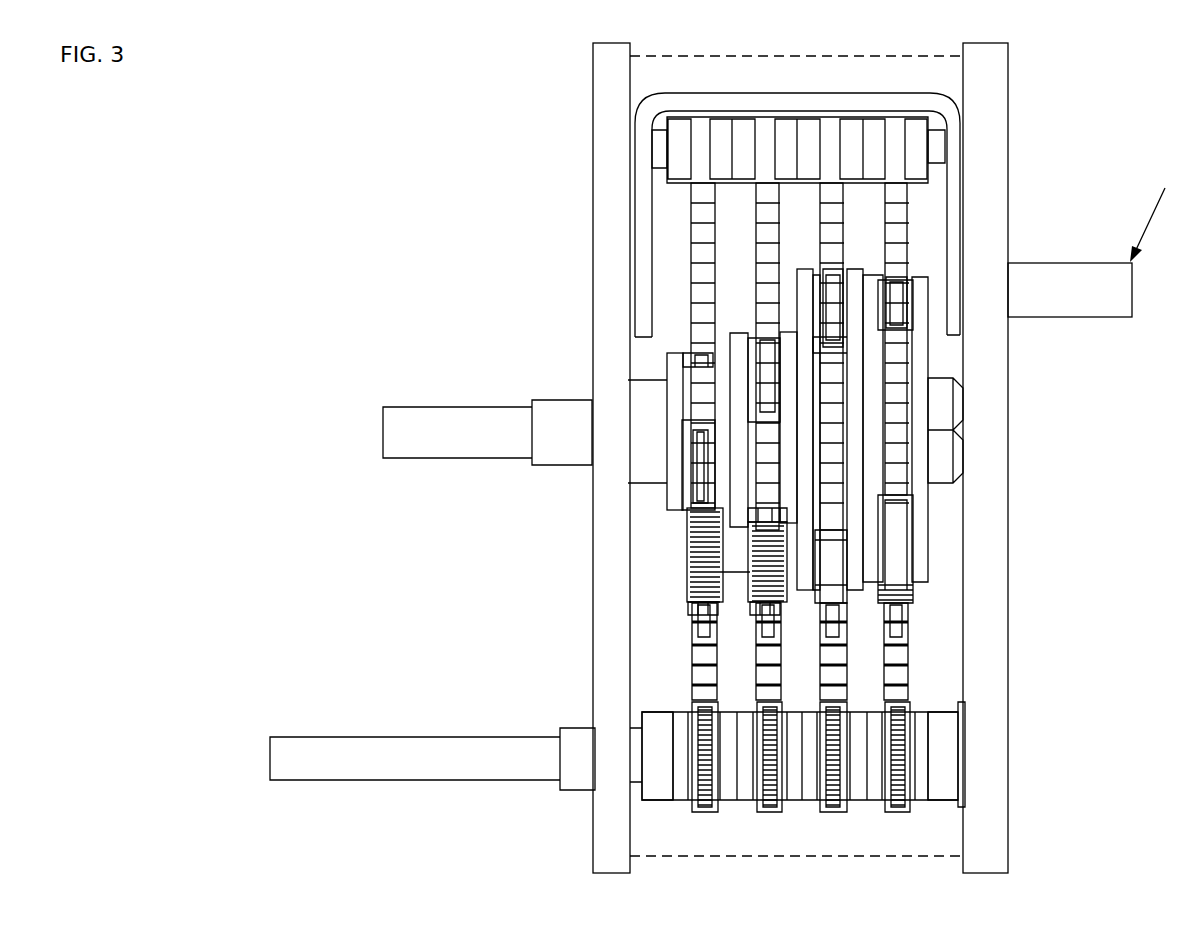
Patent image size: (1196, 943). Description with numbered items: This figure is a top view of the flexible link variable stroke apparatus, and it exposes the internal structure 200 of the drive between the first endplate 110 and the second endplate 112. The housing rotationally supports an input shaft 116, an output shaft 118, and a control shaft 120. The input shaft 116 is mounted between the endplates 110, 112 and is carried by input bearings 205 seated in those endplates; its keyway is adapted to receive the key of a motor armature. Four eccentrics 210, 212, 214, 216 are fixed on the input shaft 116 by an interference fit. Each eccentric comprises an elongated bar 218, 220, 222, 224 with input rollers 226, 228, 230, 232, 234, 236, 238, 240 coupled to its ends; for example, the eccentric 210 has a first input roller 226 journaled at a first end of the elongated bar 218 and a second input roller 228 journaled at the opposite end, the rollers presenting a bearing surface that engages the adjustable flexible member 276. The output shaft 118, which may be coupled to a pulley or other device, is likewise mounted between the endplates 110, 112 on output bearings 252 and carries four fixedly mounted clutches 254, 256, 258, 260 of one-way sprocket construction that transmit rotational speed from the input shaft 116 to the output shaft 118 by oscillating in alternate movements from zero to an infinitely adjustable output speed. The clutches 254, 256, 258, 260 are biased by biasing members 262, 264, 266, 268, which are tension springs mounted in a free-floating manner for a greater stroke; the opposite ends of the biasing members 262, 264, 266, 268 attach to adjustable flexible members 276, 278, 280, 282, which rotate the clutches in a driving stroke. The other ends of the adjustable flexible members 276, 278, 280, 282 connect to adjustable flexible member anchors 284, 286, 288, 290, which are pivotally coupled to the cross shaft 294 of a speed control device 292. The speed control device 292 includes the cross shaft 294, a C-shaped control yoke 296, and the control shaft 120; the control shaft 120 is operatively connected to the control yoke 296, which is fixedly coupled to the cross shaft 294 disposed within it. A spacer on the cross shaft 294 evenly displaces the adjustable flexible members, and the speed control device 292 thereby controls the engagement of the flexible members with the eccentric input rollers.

The first endplate 110 is at (610, 253).
The second endplate 112 is at (993, 630).
The input shaft 116 is at (476, 446).
The output shaft 118 is at (470, 745).
The control shaft 120 is at (1090, 285).
The internal structure of the flexible link variable stroke drive 200 is at (732, 823).
The input bearings 205 is at (945, 463).
The eccentric 210 is at (662, 367).
The eccentric 212 is at (739, 532).
The eccentric 214 is at (800, 268).
The eccentric 216 is at (925, 590).
The elongated bar 218 is at (675, 507).
The elongated bar 220 is at (790, 523).
The elongated bar 222 is at (852, 585).
The elongated bar 224 is at (920, 523).
The first input roller 226 is at (698, 357).
The second input roller 228 is at (700, 500).
The input roller 230 is at (767, 337).
The input roller 232 is at (765, 520).
The input roller 234 is at (829, 275).
The input roller 236 is at (830, 590).
The input roller 238 is at (895, 280).
The input roller 240 is at (898, 583).
The output bearings 252 is at (948, 782).
The clutch 254 is at (705, 728).
The clutch 256 is at (765, 805).
The clutch 258 is at (830, 808).
The clutch 260 is at (895, 808).
The biasing member 262 is at (692, 607).
The biasing member 264 is at (762, 637).
The biasing member 266 is at (830, 585).
The biasing member 268 is at (893, 677).
The adjustable flexible member 276 is at (697, 213).
The adjustable flexible member 278 is at (772, 205).
The adjustable flexible member 280 is at (830, 205).
The adjustable flexible member 282 is at (900, 205).
The adjustable flexible member anchor 284 is at (700, 145).
The adjustable flexible member anchor 286 is at (760, 145).
The adjustable flexible member anchor 288 is at (827, 145).
The adjustable flexible member anchor 290 is at (893, 145).
The speed control device 292 is at (1153, 212).
The cross shaft 294 is at (658, 140).
The control yoke 296 is at (681, 103).